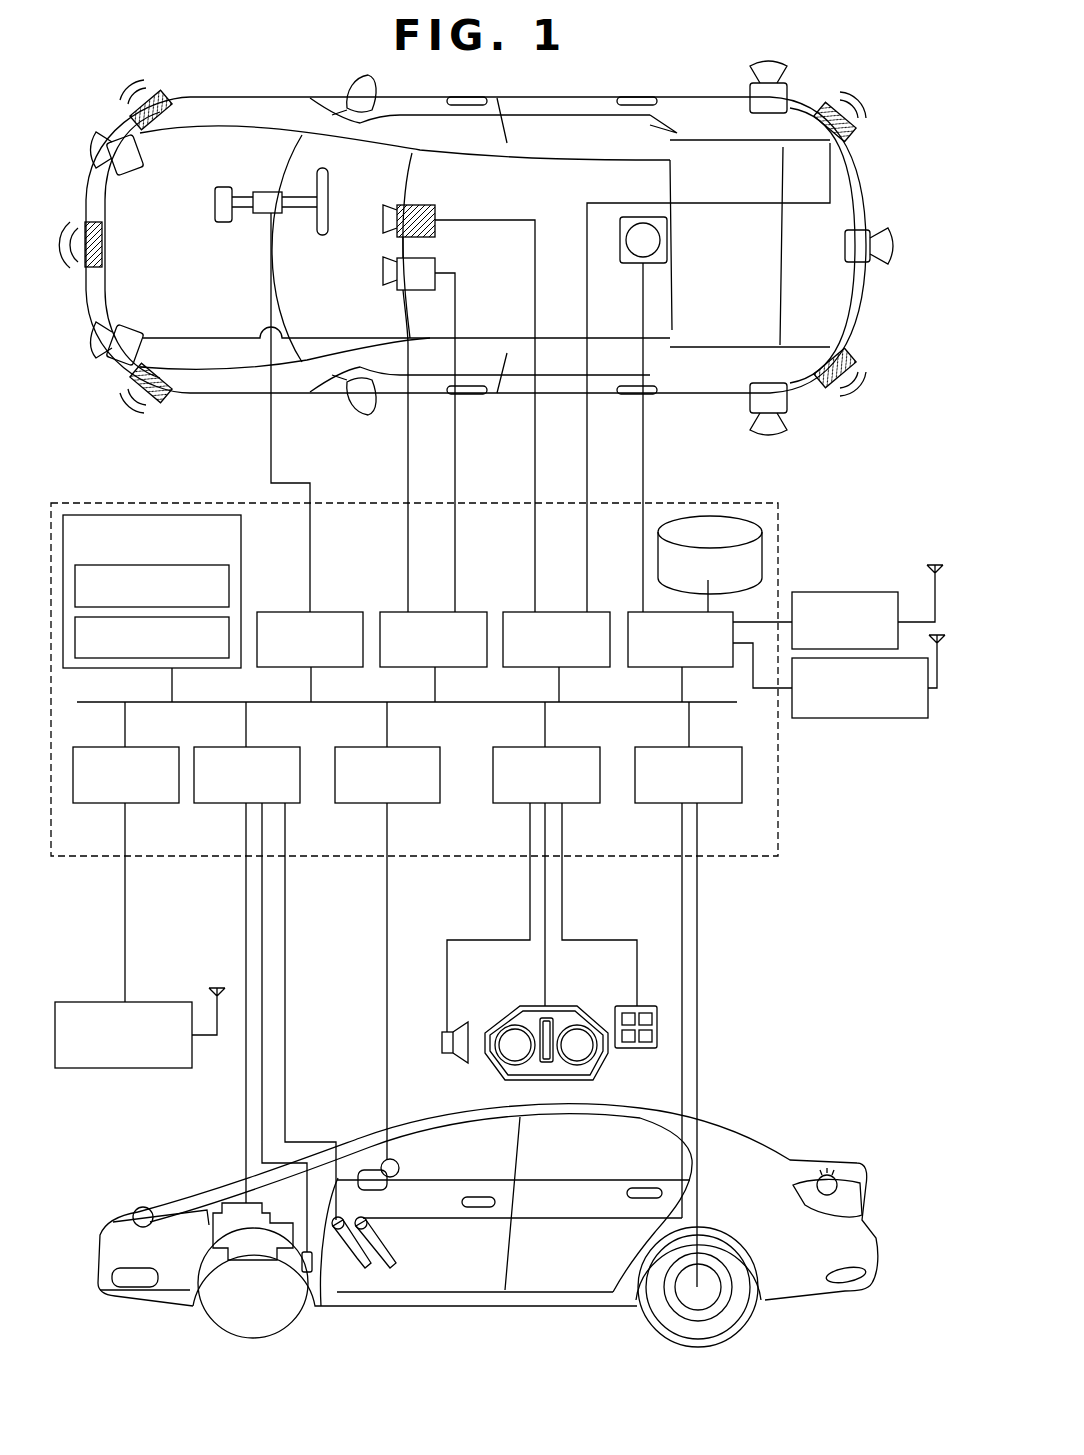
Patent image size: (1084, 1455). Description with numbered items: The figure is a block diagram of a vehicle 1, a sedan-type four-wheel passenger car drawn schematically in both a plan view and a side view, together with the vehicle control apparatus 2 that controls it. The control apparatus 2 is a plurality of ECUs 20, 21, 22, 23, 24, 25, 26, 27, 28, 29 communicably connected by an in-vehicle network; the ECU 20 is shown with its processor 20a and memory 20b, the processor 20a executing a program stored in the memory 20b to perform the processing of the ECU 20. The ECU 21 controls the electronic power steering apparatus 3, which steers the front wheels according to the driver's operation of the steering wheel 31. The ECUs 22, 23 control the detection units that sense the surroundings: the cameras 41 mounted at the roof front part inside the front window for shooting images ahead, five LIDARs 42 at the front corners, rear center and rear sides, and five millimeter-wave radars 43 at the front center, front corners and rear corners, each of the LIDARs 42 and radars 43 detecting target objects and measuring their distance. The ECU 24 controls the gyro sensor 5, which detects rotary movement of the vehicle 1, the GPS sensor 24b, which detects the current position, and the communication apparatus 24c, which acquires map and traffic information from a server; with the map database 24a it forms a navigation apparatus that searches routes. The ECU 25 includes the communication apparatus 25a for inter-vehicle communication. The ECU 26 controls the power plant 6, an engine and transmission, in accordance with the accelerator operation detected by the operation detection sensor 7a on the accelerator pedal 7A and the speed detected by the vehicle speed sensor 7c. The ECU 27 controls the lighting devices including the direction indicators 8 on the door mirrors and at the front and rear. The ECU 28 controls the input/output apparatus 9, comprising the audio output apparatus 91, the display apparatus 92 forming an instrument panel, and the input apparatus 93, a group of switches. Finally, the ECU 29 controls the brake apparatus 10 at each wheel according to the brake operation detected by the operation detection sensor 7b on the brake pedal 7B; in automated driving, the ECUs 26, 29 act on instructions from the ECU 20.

The vehicle 1 is at (872, 158).
The vehicle control apparatus 2 is at (772, 860).
The electronic power steering apparatus 3 is at (222, 222).
The steering wheel 31 is at (322, 235).
The camera 41 is at (435, 212).
The LIDAR 42 is at (137, 178).
The millimeter-wave radar 43 is at (172, 97).
The gyro sensor 5 is at (667, 240).
The power plant 6 is at (218, 1205).
The accelerator pedal 7A is at (366, 1265).
The brake pedal 7B is at (389, 1253).
The operation detection sensor 7a is at (356, 1156).
The operation detection sensor 7b is at (366, 1218).
The vehicle speed sensor 7c is at (310, 1280).
The direction indicator 8 is at (134, 1210).
The input/output apparatus 9 is at (537, 1054).
The audio output apparatus 91 is at (441, 1037).
The display apparatus 92 is at (505, 1020).
The input apparatus 93 is at (630, 1048).
The brake apparatus 10 is at (700, 1310).
The ECU 20 is at (179, 566).
The processor 20a is at (222, 565).
The memory 20b is at (222, 617).
The ECU 21 is at (343, 608).
The ECU 22 is at (430, 608).
The ECU 23 is at (562, 608).
The ECU 24 is at (630, 608).
The map database 24a is at (706, 516).
The GPS sensor 24b is at (872, 592).
The communication apparatus 24c is at (869, 720).
The ECU 25 is at (156, 805).
The communication apparatus 25a is at (124, 1070).
The ECU 26 is at (218, 805).
The ECU 27 is at (418, 805).
The ECU 28 is at (587, 805).
The ECU 29 is at (727, 805).